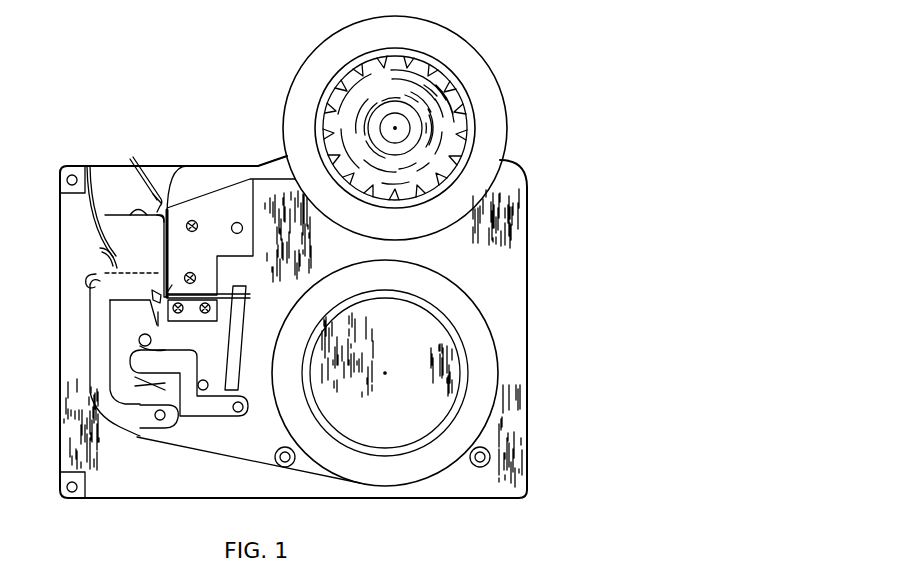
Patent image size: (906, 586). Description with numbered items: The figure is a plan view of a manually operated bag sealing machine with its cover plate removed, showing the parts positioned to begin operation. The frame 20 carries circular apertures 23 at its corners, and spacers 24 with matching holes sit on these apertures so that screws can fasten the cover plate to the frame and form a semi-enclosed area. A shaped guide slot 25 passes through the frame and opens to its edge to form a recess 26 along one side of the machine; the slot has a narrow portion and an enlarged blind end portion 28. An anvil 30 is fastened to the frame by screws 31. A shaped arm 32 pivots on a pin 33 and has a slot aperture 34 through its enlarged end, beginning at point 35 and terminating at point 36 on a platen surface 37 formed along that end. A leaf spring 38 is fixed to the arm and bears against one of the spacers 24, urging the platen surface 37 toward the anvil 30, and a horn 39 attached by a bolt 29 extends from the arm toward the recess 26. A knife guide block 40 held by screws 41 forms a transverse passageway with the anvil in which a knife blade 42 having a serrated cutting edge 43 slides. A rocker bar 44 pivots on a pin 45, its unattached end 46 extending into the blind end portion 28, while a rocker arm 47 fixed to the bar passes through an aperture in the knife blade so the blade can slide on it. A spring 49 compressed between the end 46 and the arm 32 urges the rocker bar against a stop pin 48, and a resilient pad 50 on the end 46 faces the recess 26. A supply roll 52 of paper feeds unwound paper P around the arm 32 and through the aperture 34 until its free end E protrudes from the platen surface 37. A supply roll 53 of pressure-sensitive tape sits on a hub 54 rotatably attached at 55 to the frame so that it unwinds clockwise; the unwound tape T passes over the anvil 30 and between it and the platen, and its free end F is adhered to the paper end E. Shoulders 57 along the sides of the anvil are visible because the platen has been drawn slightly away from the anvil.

The frame 20 is at (515, 190).
The circular apertures 23 is at (81, 166).
The spacers 24 is at (60, 180).
The guide slot 25 is at (170, 192).
The recess 26 is at (162, 173).
The enlarged blind end portion 28 is at (153, 311).
The bolt 29 is at (131, 210).
The anvil 30 is at (243, 248).
The screws 31 is at (192, 221).
The shaped arm 32 is at (138, 425).
The pin 33 is at (166, 418).
The slot aperture 34 is at (101, 249).
The beginning point of aperture 35 is at (86, 278).
The termination point of aperture 36 is at (162, 262).
The platen surface 37 is at (163, 222).
The leaf spring 38 is at (117, 181).
The horn 39 is at (153, 194).
The knife guide block 40 is at (180, 330).
The screws 41 is at (179, 312).
The knife blade 42 is at (217, 296).
The serrated cutting edge 43 is at (168, 291).
The rocker bar 44 is at (192, 364).
The pin 45 is at (236, 396).
The unattached end 46 is at (140, 346).
The rocker arm 47 is at (241, 320).
The stop pin 48 is at (201, 381).
The spring 49 is at (140, 409).
The resilient pad 50 is at (155, 336).
The supply roll of paper 52 is at (478, 345).
The supply roll of tape 53 is at (492, 97).
The hub 54 is at (437, 90).
The rotatable attachment 55 is at (410, 137).
The shoulders 57 is at (168, 238).
The free end of paper E is at (154, 294).
The free end of tape F is at (160, 320).
The unwound tape T is at (256, 166).
The unwound paper P is at (230, 460).